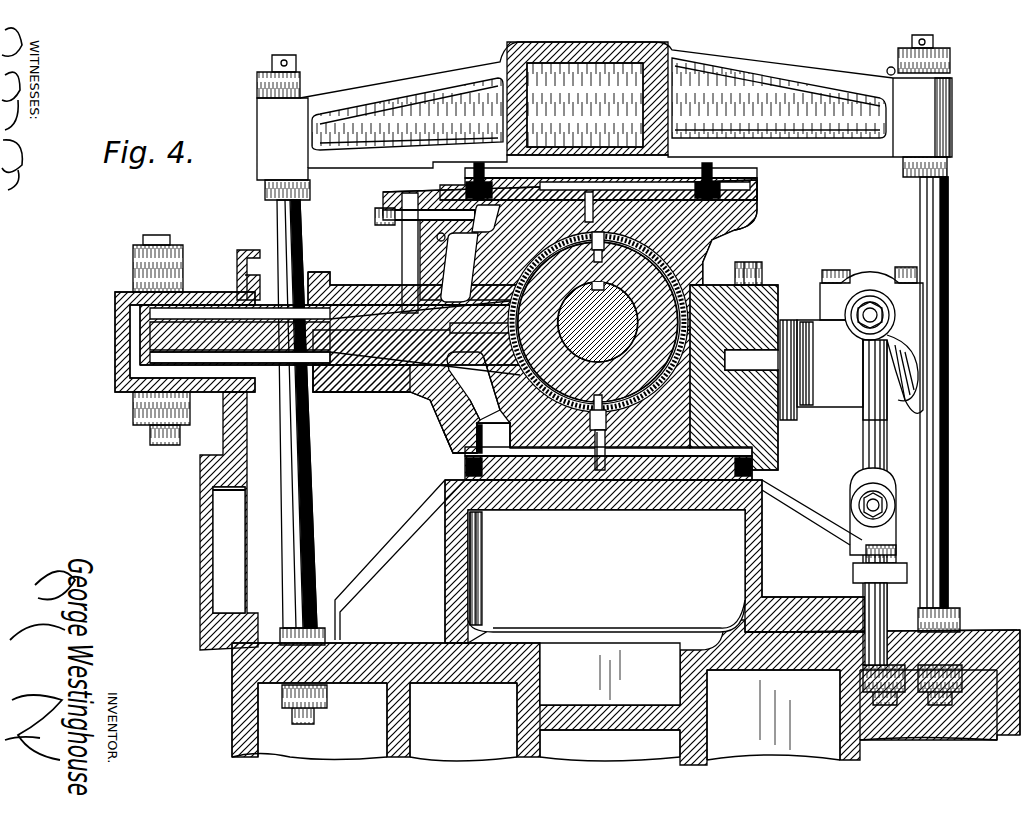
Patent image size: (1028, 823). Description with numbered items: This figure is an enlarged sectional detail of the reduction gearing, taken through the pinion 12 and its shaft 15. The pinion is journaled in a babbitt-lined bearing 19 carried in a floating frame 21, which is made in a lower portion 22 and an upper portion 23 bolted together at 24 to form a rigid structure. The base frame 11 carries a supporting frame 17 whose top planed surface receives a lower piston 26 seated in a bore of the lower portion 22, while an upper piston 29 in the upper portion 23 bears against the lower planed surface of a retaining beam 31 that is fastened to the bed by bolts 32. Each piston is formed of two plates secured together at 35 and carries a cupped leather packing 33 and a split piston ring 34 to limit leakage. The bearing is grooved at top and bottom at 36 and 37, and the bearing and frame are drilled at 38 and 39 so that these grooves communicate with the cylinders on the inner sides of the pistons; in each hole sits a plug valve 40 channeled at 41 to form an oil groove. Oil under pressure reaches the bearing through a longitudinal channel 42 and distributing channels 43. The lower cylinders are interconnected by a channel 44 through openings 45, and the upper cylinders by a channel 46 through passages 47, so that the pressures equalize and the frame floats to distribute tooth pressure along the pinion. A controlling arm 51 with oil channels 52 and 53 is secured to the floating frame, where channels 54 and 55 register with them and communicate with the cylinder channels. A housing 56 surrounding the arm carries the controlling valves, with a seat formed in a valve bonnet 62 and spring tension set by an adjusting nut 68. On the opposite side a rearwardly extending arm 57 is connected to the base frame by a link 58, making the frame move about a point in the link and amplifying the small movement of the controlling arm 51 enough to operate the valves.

The base frame 11 is at (402, 745).
The pinion 12 is at (712, 260).
The shaft 15 is at (598, 322).
The supporting frame 17 is at (635, 607).
The bearing 19 is at (672, 385).
The floating frame 21 is at (790, 310).
The lower portion of the floating frame 22 is at (700, 365).
The upper portion of the floating frame 23 is at (758, 225).
The bolt 24 is at (752, 265).
The piston 26 is at (532, 478).
The piston 29 is at (587, 188).
The retaining beam 31 is at (660, 44).
The bolt 32 is at (278, 212).
The cupped leather packing 33 is at (750, 455).
The split piston ring 34 is at (745, 475).
The screw fastening 35 is at (479, 170).
The groove 36 is at (568, 408).
The groove 37 is at (632, 246).
The drilled hole 38 is at (630, 405).
The drilled hole 39 is at (590, 242).
The plug valve 40 is at (588, 190).
The oil groove 41 is at (560, 184).
The channel 42 is at (460, 322).
The distributing channel 43 is at (472, 356).
The channel 44 is at (472, 403).
The opening 45 is at (468, 444).
The channel 46 is at (420, 222).
The passage 47 is at (488, 212).
The controlling arm 51 is at (150, 328).
The oil channel 52 is at (186, 315).
The oil channel 53 is at (155, 352).
The channel 54 is at (366, 290).
The channel 55 is at (392, 378).
The housing 56 is at (125, 390).
The rearwardly extending arm 57 is at (853, 336).
The link 58 is at (880, 440).
The valve bonnet 62 is at (142, 412).
The adjusting nut 68 is at (167, 432).